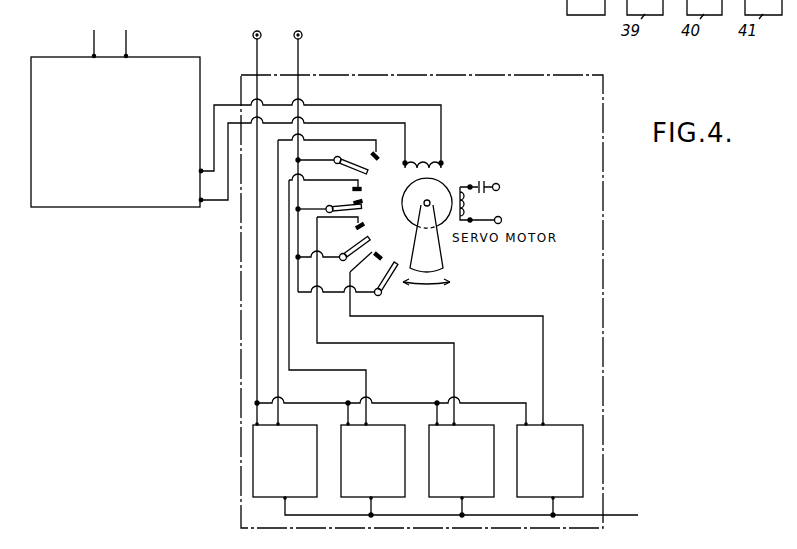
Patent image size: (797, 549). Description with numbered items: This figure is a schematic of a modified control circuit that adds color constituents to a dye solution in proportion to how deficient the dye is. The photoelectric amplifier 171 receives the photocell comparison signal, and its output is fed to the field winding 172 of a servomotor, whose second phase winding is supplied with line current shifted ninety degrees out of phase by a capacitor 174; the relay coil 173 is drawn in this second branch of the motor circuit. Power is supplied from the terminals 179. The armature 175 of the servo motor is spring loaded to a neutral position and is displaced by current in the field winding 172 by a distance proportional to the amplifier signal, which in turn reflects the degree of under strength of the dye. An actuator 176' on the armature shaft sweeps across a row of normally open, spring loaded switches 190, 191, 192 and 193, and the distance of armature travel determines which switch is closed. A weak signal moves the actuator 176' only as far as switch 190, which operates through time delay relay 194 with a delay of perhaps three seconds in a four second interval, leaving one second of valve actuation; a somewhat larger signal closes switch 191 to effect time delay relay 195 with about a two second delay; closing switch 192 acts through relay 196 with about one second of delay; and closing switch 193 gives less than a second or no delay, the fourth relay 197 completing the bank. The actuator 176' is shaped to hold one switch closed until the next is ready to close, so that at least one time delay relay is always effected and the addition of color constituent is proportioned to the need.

The photoelectric amplifier 171 is at (124, 169).
The field winding 172 is at (419, 161).
The relay coil 173 is at (471, 210).
The capacitor 174 is at (487, 183).
The armature 175 is at (446, 182).
The actuator 176' is at (449, 245).
The terminals 179 is at (262, 33).
The switch 190 is at (348, 274).
The switch 191 is at (366, 233).
The switch 192 is at (360, 203).
The switch 193 is at (374, 165).
The time delay relay 194 is at (563, 470).
The time delay relay 195 is at (474, 470).
The time delay relay 196 is at (386, 470).
The block 197 is at (298, 470).